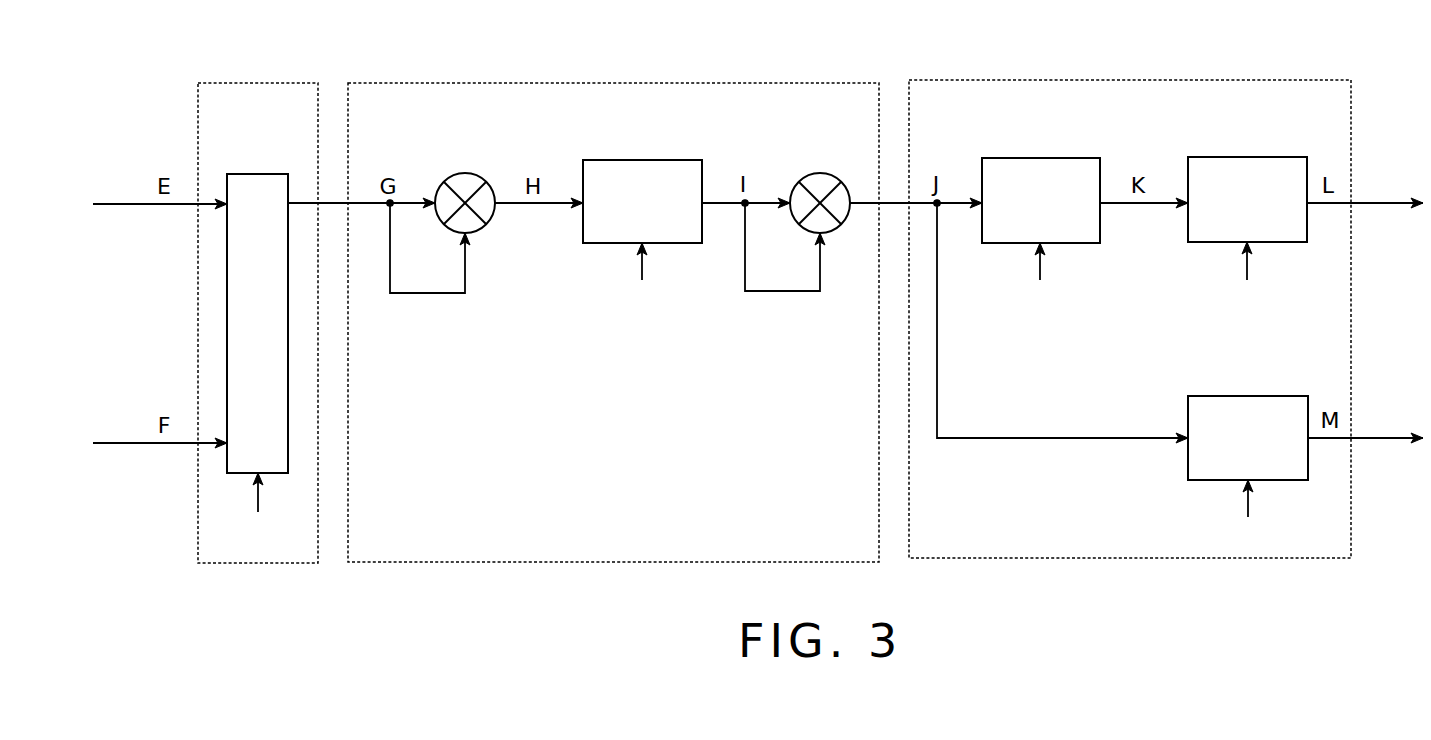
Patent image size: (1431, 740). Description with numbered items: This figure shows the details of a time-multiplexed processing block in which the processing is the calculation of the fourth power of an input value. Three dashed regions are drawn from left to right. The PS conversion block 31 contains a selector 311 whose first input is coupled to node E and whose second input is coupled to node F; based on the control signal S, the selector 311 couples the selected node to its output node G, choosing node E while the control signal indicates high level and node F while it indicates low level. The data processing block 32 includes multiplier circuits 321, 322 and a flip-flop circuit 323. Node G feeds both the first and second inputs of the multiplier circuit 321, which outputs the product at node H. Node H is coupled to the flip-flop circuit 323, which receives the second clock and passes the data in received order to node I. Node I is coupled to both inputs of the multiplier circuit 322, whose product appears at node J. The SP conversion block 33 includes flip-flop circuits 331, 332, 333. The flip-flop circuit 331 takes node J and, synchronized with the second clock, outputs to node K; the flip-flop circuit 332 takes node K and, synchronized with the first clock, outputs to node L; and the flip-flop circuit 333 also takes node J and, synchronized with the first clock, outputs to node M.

The PS conversion block 31 is at (256, 83).
The selector 311 is at (257, 174).
The data processing block 32 is at (579, 83).
The multiplier circuit 321 is at (465, 173).
The multiplier circuit 322 is at (819, 173).
The flip-flop circuit 323 is at (641, 160).
The SP conversion block 33 is at (1128, 80).
The flip-flop circuit 331 is at (1040, 158).
The flip-flop circuit 332 is at (1247, 157).
The flip-flop circuit 333 is at (1248, 396).